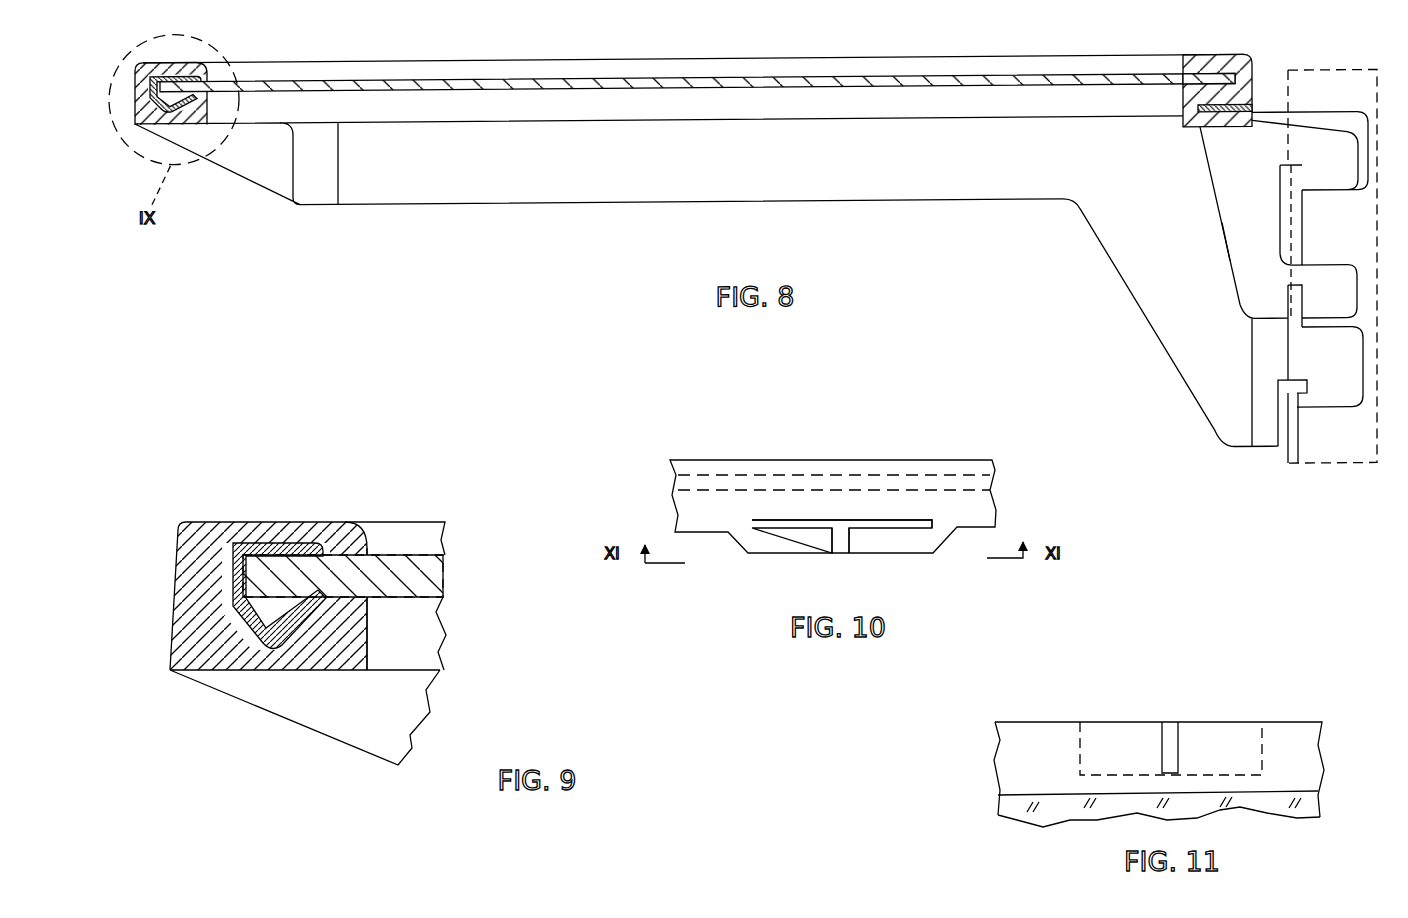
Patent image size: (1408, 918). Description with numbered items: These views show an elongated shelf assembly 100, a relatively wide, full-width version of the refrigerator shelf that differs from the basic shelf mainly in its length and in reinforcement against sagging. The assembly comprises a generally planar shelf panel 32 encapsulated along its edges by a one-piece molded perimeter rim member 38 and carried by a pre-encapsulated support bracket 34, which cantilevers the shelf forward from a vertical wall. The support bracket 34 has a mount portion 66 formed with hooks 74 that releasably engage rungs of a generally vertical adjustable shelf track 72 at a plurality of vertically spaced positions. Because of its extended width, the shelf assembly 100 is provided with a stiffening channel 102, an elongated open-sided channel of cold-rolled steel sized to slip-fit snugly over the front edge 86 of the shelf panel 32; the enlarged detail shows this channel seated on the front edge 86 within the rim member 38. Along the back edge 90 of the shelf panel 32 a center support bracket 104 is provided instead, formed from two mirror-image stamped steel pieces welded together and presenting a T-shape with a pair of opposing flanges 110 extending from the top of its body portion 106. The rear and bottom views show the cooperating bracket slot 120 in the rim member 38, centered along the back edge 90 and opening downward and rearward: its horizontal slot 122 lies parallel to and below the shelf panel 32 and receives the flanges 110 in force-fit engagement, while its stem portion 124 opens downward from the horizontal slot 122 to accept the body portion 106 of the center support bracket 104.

In FIG. 8, the shelf panel 32 is at (597, 85).
In FIG. 9, the shelf panel 32 is at (437, 575).
In FIG. 8, the support bracket 34 is at (953, 194).
In FIG. 9, the support bracket 34 is at (305, 717).
In FIG. 8, the perimeter rim member 38 is at (407, 74).
In FIG. 9, the perimeter rim member 38 is at (437, 533).
In FIG. 8, the mount portion 66 is at (1252, 394).
In FIG. 8, the shelf track 72 is at (1348, 86).
In FIG. 8, the hook 74 is at (1338, 408).
In FIG. 9, the front edge 86 is at (233, 583).
In FIG. 8, the back edge 90 is at (1247, 80).
In FIG. 8, the elongated shelf assembly 100 is at (620, 279).
In FIG. 8, the stiffening channel 102 is at (193, 75).
In FIG. 9, the stiffening channel 102 is at (290, 542).
In FIG. 8, the center support bracket 104 is at (1220, 242).
In FIG. 8, the body portion 106 is at (1225, 194).
In FIG. 8, the flange 110 is at (1225, 125).
In FIG. 10, the bracket slot 120 is at (791, 535).
In FIG. 10, the horizontal slot 122 is at (890, 522).
In FIG. 11, the horizontal slot 122 is at (1235, 742).
In FIG. 10, the stem portion 124 is at (838, 547).
In FIG. 11, the stem portion 124 is at (1168, 732).